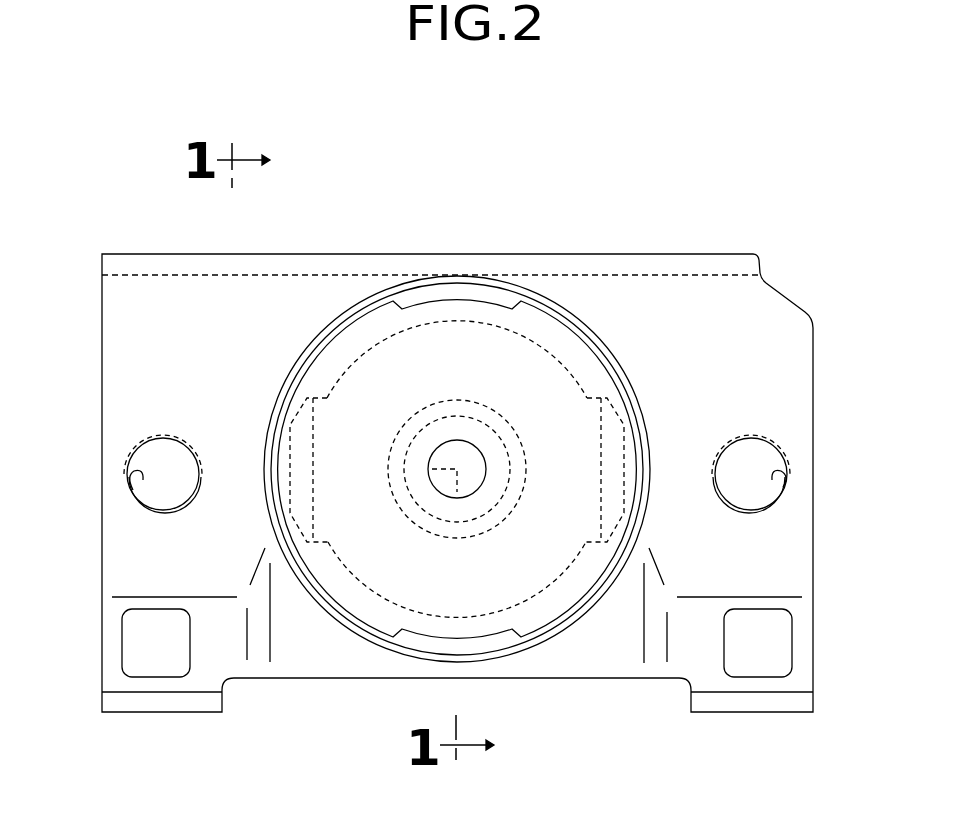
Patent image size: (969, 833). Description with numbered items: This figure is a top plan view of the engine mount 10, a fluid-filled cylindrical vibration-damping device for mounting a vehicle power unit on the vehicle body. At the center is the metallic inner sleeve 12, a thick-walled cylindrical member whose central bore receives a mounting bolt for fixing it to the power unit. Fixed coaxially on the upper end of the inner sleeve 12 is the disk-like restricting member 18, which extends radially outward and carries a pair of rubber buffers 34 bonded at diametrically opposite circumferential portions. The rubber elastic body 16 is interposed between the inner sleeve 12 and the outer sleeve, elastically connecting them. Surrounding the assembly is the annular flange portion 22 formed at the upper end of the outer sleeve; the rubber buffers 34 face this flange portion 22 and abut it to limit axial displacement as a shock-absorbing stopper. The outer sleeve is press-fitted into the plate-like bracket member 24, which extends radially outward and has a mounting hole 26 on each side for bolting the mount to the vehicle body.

The engine mount 10 is at (557, 235).
The inner sleeve 12 is at (432, 498).
The rubber elastic body 16 is at (380, 375).
The restricting member 18 is at (548, 568).
The flange portion 22 is at (602, 348).
The bracket member 24 is at (790, 395).
The mounting hole 26 is at (133, 490).
The rubber buffer 34 is at (300, 436).